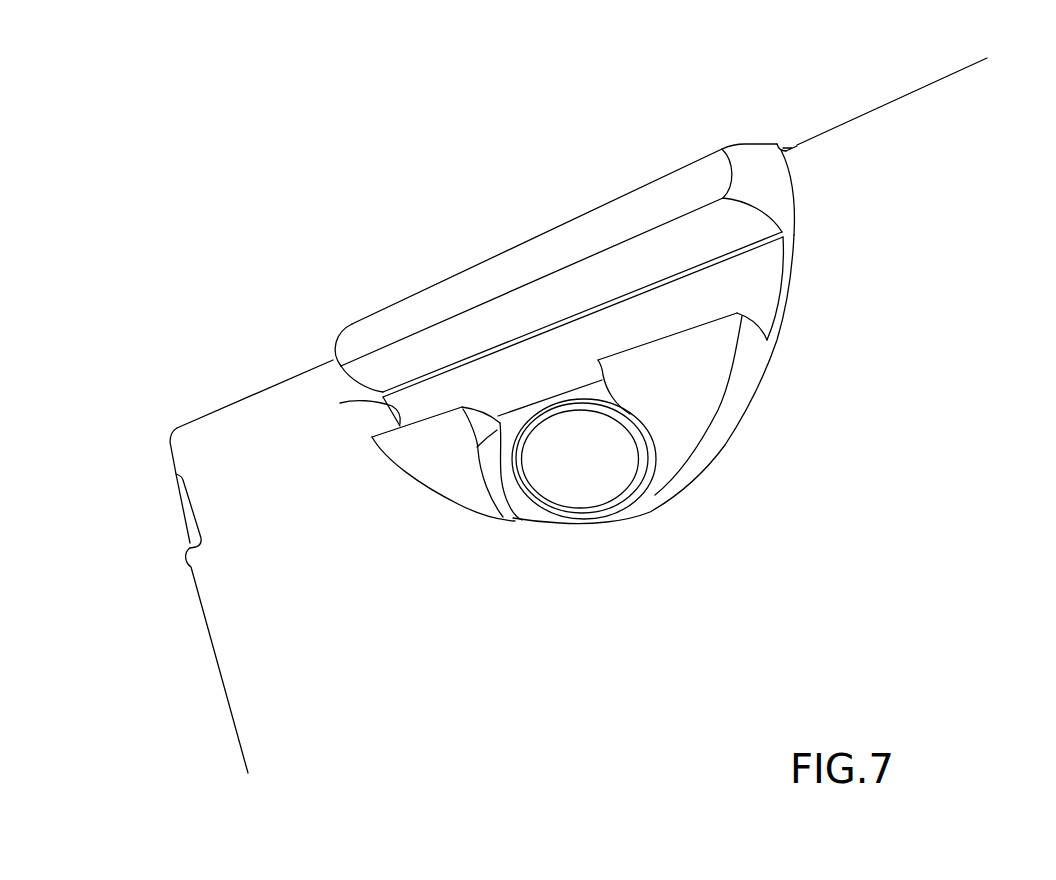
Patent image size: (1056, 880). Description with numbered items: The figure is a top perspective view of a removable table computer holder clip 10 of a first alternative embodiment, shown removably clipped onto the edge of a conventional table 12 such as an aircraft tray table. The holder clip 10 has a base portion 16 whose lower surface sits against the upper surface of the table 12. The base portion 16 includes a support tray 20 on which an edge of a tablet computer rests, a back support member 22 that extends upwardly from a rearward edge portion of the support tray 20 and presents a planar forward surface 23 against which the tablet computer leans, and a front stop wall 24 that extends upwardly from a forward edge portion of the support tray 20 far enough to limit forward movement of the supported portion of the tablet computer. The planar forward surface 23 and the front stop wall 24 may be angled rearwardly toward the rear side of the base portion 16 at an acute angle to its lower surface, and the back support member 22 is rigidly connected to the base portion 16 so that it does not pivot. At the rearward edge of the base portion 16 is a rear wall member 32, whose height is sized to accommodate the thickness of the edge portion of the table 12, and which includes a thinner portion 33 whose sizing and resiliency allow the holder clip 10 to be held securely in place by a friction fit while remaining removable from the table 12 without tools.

The removable table computer holder clip 10 is at (356, 268).
The table 12 is at (927, 472).
The base portion 16 is at (756, 357).
The support tray 20 is at (760, 293).
The back support member 22 is at (763, 185).
The planar forward surface 23 is at (554, 320).
The front stop wall 24 is at (340, 403).
The rear wall member 32 is at (785, 143).
The thinner portion 33 is at (790, 151).